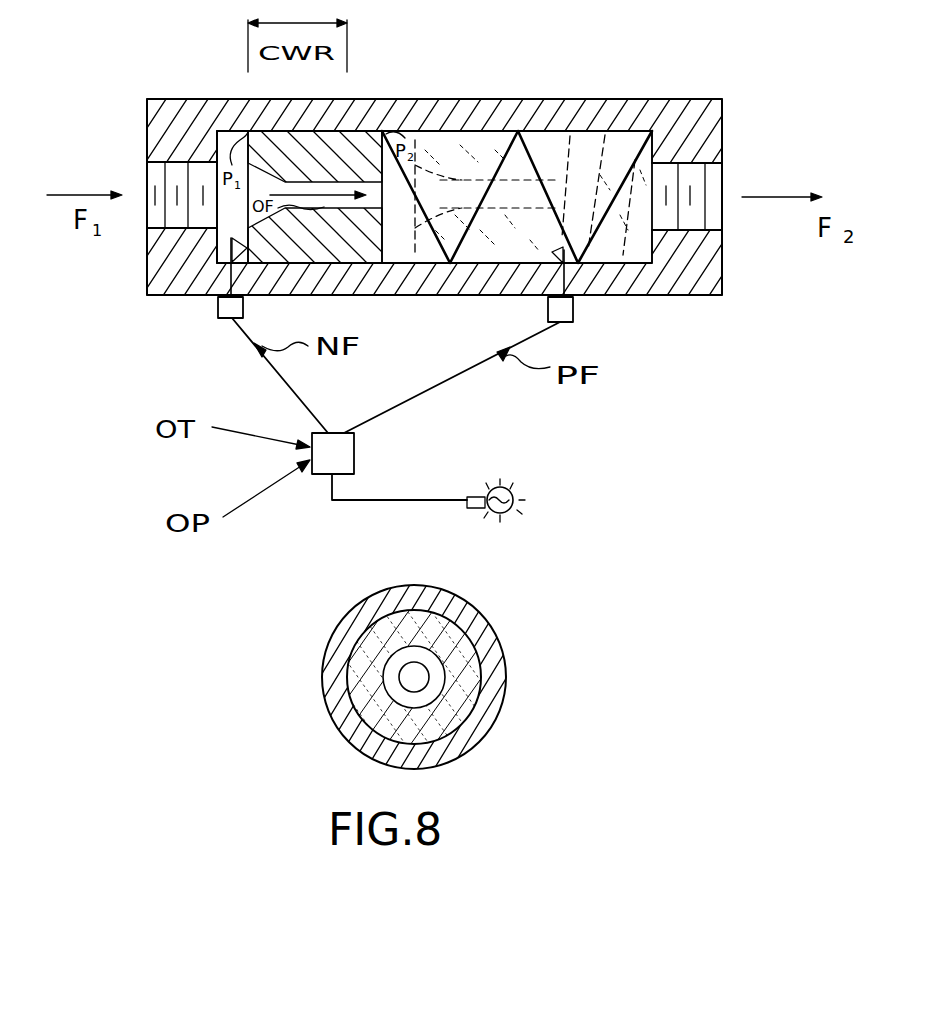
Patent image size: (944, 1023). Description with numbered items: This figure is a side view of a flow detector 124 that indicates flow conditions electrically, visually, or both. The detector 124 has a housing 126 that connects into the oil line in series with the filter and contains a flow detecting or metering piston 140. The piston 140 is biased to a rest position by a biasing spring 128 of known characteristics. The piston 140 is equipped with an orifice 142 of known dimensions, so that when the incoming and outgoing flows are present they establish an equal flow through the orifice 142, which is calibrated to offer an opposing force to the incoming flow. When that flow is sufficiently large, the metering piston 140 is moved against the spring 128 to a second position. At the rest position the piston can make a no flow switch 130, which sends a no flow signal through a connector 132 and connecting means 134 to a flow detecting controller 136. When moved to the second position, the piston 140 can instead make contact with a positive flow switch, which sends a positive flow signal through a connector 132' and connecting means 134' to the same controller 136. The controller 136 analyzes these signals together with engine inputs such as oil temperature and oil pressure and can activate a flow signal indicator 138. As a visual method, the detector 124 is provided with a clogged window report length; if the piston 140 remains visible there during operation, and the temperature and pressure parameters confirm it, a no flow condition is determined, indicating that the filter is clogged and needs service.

The flow detector 124 is at (690, 302).
The housing 126 is at (607, 99).
The biasing spring 128 is at (398, 185).
The no flow switch 130 is at (236, 248).
The connector 132 is at (196, 305).
The connector 132' is at (583, 295).
The connecting means 134 is at (308, 375).
The connecting means 134' is at (452, 377).
The flow detecting controller 136 is at (356, 455).
The flow signal indicator 138 is at (481, 492).
The metering piston 140 is at (388, 246).
The orifice 142 is at (312, 187).